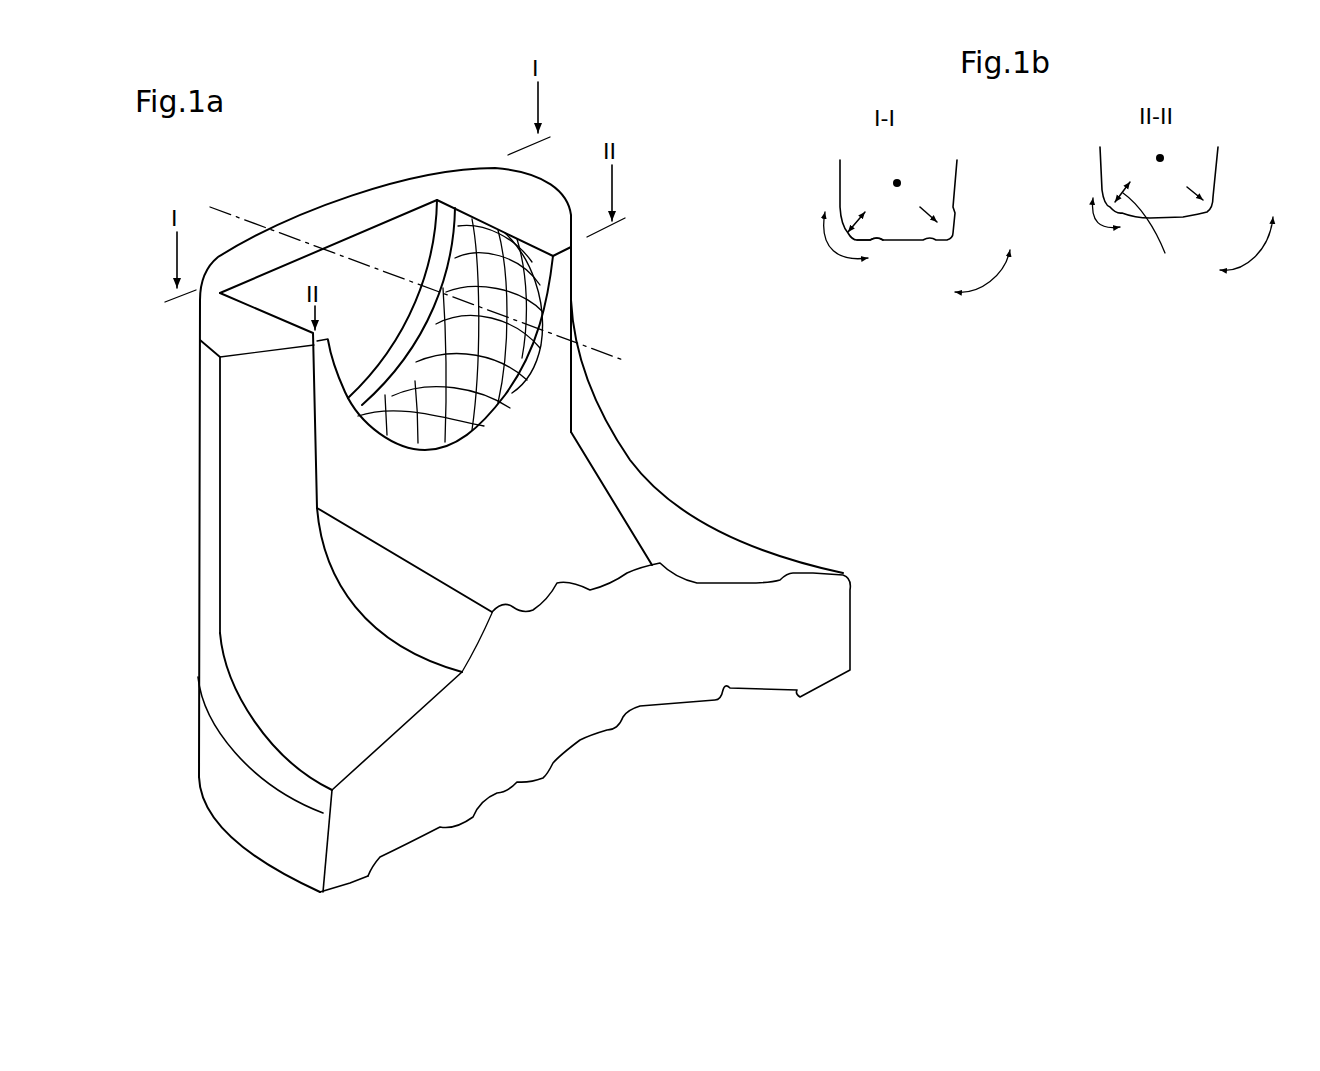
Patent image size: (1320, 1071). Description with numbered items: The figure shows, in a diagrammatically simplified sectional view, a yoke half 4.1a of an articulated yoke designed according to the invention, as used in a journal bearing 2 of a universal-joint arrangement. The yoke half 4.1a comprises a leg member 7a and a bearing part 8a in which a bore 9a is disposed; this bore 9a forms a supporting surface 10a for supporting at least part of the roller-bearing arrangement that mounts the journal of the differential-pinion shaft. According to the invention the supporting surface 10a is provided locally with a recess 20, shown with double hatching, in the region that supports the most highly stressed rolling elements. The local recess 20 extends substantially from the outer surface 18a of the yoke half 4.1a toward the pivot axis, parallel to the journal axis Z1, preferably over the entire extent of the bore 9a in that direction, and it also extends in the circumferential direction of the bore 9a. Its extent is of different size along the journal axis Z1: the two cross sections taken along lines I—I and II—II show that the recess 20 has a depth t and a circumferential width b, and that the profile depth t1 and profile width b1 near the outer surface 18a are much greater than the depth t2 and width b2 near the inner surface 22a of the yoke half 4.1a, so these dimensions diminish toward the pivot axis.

In FIG. 1A, the journal bearing 2 is at (625, 743).
In FIG. 1A, the yoke half 4.1a is at (613, 460).
In FIG. 1A, the leg member 7a is at (353, 873).
In FIG. 1A, the bearing part 8a is at (210, 320).
In FIG. 1A, the bore 9a is at (372, 366).
In FIG. 1A, the supporting surface 10a is at (433, 433).
In FIG. 1A, the outer surface 18a is at (343, 200).
In FIG. 1A, the recess 20 is at (513, 300).
In FIG. 1A, the inner surface 22a is at (582, 540).
In FIG. 1A, the journal axis Z1 is at (603, 352).
In FIG. 1B, the depth of recess t is at (862, 223).
In FIG. 1B, the profile depth along line I—I t1 is at (954, 239).
In FIG. 1B, the profile depth along line II—II t2 is at (1213, 212).
In FIG. 1B, the width of recess b is at (1117, 263).
In FIG. 1B, the profile width along line I—I b1 is at (831, 241).
In FIG. 1B, the profile width along line II—II b2 is at (1092, 218).